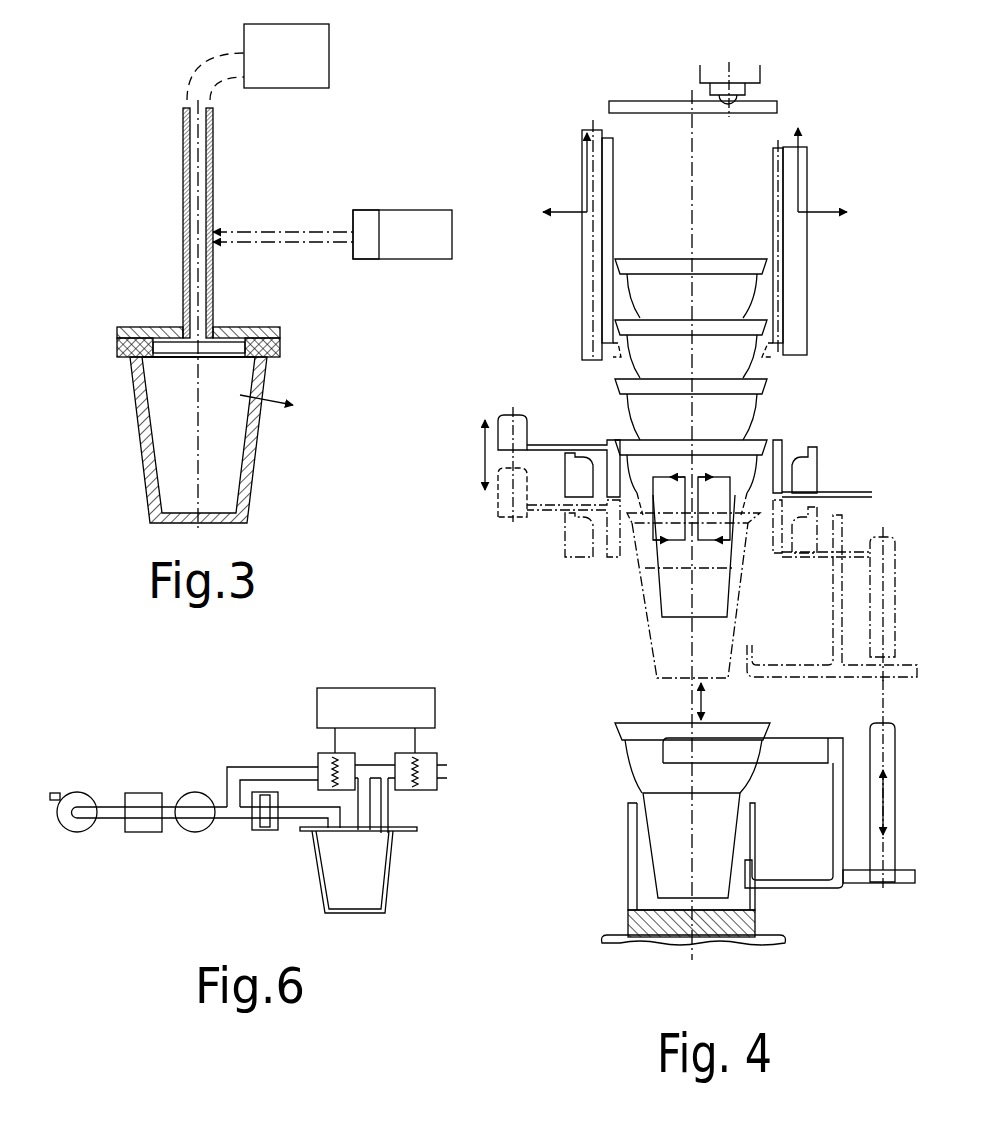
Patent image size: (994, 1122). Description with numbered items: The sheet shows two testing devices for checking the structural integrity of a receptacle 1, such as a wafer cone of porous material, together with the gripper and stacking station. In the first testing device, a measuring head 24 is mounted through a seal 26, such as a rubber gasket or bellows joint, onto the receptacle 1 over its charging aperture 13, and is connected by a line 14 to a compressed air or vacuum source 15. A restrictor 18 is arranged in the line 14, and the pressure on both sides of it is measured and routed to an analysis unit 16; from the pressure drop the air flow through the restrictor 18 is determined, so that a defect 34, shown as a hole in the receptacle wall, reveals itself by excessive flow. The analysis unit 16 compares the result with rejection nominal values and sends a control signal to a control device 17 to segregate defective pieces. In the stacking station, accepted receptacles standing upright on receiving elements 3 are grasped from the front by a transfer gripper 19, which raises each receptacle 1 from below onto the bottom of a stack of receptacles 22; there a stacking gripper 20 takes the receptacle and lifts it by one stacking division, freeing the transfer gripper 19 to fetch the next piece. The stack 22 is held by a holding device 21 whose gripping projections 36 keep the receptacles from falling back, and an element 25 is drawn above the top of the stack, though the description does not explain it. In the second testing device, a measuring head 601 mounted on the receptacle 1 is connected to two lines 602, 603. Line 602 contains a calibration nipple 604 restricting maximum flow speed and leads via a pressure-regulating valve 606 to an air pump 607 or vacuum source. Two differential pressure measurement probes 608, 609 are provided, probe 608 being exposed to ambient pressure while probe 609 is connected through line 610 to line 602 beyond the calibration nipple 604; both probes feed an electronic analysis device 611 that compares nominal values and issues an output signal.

In FIG. 3, the receptacle 1 is at (253, 490).
In FIG. 4, the receptacle 1 is at (722, 630).
In FIG. 6, the receptacle 1 is at (320, 880).
In FIG. 4, the receiving element 3 is at (750, 842).
In FIG. 3, the charging aperture 13 is at (172, 357).
In FIG. 3, the line 14 is at (183, 150).
In FIG. 3, the compressed air or vacuum source 15 is at (317, 58).
In FIG. 3, the analysis unit 16 is at (366, 255).
In FIG. 3, the control device 17 is at (430, 222).
In FIG. 3, the restrictor 18 is at (193, 238).
In FIG. 4, the transfer gripper 19 is at (833, 577).
In FIG. 4, the stacking gripper 20 is at (580, 443).
In FIG. 4, the holding device 21 is at (800, 277).
In FIG. 4, the stack of receptacles 22 is at (608, 382).
In FIG. 3, the measuring head 24 is at (138, 327).
In FIG. 4, the stack pressing member 25 is at (750, 73).
In FIG. 3, the seal 26 is at (280, 345).
In FIG. 3, the defect 34 is at (257, 398).
In FIG. 4, the gripping projections 36 is at (783, 352).
In FIG. 6, the measuring head 601 is at (410, 829).
In FIG. 6, the line 602 is at (107, 808).
In FIG. 6, the line 603 is at (378, 808).
In FIG. 6, the calibration nipple 604 is at (260, 830).
In FIG. 6, the pressure-regulating valve 606 is at (142, 832).
In FIG. 6, the air pump 607 is at (72, 826).
In FIG. 6, the differential pressure measurement probe 608 is at (427, 760).
In FIG. 6, the differential pressure measurement probe 609 is at (327, 762).
In FIG. 6, the line 610 is at (253, 773).
In FIG. 6, the electronic analysis device 611 is at (325, 707).